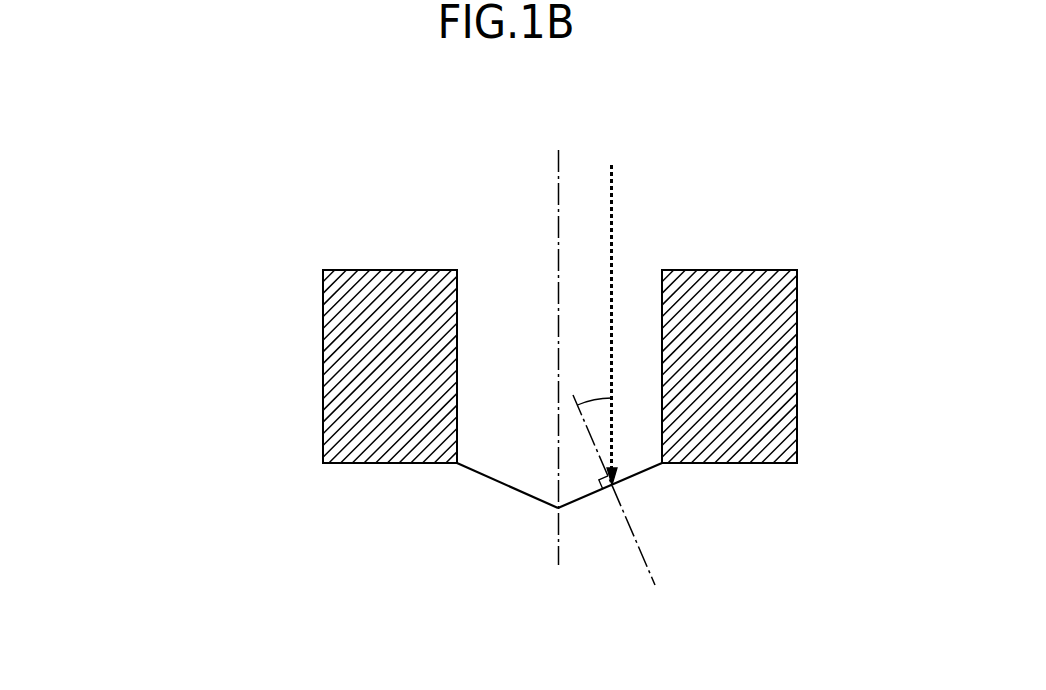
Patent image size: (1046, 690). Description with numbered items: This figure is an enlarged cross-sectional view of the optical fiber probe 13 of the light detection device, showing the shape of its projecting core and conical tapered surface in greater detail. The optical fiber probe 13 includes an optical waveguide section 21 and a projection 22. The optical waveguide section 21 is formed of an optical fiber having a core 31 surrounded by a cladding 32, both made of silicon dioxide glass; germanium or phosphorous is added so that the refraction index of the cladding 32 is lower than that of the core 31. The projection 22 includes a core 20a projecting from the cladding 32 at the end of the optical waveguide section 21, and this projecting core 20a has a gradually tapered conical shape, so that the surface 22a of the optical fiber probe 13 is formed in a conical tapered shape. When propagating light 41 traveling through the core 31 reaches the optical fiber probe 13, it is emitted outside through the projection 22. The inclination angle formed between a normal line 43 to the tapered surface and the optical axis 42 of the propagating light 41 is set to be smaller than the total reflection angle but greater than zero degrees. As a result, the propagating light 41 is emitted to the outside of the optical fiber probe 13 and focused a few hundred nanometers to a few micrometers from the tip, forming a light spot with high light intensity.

The optical fiber probe 13 is at (190, 212).
The optical waveguide section 21 is at (287, 260).
The projection 22 is at (287, 467).
The surface 22a is at (505, 489).
The projecting core 20a is at (632, 465).
The core 31 is at (510, 295).
The cladding 32 is at (367, 270).
The propagating light 41 is at (613, 222).
The optical axis 42 is at (560, 172).
The normal line 43 is at (648, 570).